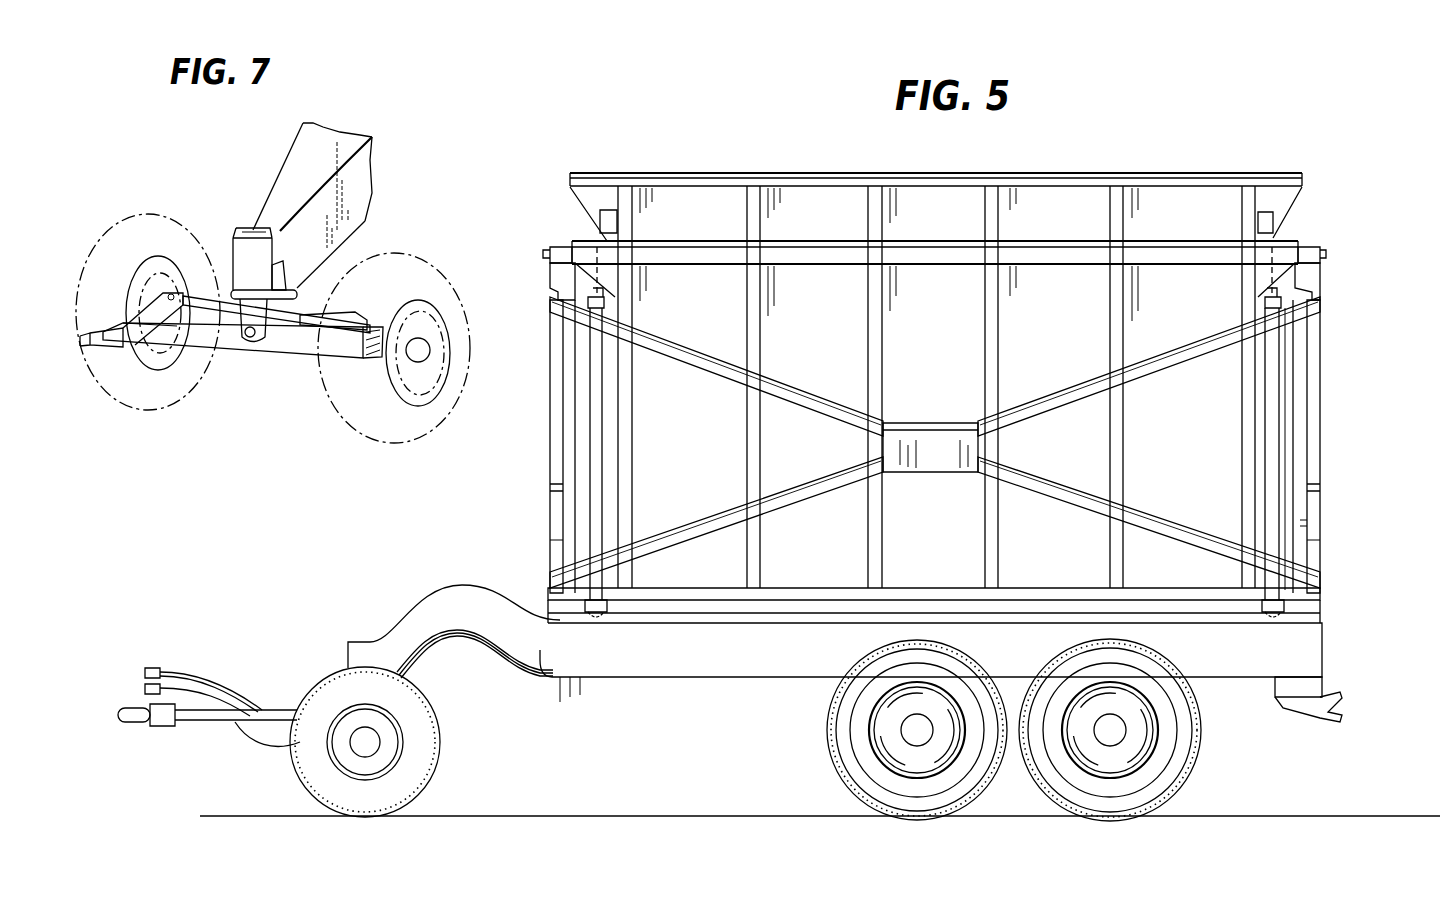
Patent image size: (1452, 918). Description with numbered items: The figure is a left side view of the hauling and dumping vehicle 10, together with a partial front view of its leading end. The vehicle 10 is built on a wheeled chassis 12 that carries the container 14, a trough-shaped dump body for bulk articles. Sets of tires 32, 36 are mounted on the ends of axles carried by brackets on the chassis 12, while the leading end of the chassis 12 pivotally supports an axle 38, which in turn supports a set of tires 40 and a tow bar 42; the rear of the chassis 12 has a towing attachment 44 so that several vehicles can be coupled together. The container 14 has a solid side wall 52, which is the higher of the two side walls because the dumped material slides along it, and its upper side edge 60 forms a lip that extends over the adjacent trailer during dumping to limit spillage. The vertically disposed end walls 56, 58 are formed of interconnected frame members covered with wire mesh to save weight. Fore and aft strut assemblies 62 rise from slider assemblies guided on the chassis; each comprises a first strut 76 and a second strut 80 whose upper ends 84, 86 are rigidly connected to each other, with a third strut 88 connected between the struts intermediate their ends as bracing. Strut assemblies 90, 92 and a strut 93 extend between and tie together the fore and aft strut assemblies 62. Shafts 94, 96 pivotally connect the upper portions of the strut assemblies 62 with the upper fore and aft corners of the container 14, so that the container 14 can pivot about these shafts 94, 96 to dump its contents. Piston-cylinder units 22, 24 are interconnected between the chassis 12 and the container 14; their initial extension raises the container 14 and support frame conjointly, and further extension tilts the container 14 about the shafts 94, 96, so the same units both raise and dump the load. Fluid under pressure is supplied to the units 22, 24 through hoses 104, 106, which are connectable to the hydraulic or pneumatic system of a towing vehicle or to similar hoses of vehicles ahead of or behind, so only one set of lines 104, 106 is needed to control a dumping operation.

In FIG. 5, the vehicle 10 is at (1226, 160).
In FIG. 7, the chassis 12 is at (243, 165).
In FIG. 5, the chassis 12 is at (416, 592).
In FIG. 5, the container 14 is at (934, 364).
In FIG. 5, the piston-cylinder unit 22 is at (600, 448).
In FIG. 5, the piston-cylinder unit 24 is at (1268, 482).
In FIG. 5, the tire 32 is at (835, 745).
In FIG. 5, the tire 36 is at (1180, 752).
In FIG. 7, the axle 38 is at (283, 360).
In FIG. 7, the tires 40 is at (128, 392).
In FIG. 5, the tires 40 is at (442, 742).
In FIG. 7, the tow bar 42 is at (104, 330).
In FIG. 5, the tow bar 42 is at (152, 726).
In FIG. 5, the towing attachment 44 is at (1340, 708).
In FIG. 5, the side wall 52 is at (946, 362).
In FIG. 5, the end wall 56 is at (1258, 390).
In FIG. 5, the end wall 58 is at (580, 372).
In FIG. 5, the upper side edge 60 is at (960, 176).
In FIG. 5, the strut assembly 62 is at (963, 418).
In FIG. 5, the first strut 76 is at (550, 416).
In FIG. 5, the second strut 80 is at (551, 506).
In FIG. 5, the upper bracket 84 is at (1302, 330).
In FIG. 5, the upper end 86 is at (1312, 332).
In FIG. 5, the third strut 88 is at (1312, 516).
In FIG. 5, the strut assembly 90 is at (660, 348).
In FIG. 5, the strut assembly 92 is at (738, 506).
In FIG. 5, the strut 93 is at (912, 592).
In FIG. 5, the shaft 94 is at (543, 250).
In FIG. 5, the shaft 96 is at (1326, 258).
In FIG. 5, the hose 104 is at (168, 670).
In FIG. 5, the hose 106 is at (146, 688).